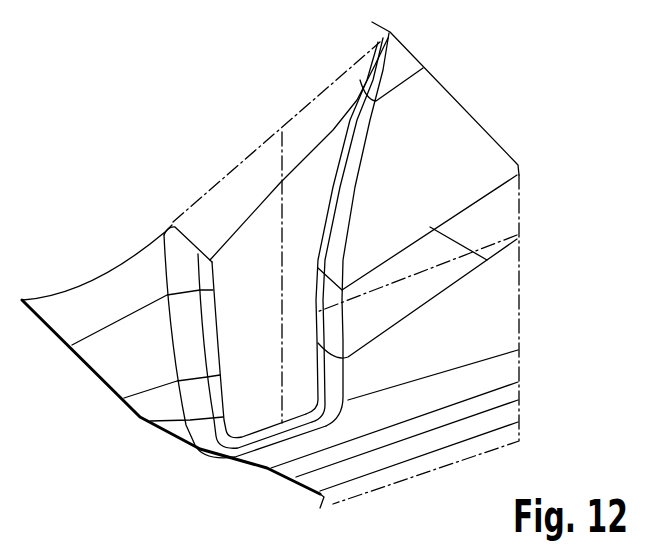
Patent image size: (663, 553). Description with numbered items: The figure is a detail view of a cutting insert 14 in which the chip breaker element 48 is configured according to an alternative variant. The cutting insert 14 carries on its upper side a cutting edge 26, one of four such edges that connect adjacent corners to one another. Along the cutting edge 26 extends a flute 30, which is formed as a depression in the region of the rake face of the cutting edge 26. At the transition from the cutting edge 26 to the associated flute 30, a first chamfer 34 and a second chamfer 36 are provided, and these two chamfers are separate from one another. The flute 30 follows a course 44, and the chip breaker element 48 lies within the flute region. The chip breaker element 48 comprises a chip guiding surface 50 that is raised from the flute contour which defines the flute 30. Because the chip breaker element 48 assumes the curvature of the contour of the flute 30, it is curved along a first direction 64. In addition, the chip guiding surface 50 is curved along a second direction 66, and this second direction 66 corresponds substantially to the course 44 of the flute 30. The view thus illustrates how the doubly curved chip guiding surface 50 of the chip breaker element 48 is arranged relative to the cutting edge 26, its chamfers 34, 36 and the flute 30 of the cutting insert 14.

The cutting insert 14 is at (507, 108).
The cutting edge 26 is at (503, 427).
The flute 30 is at (524, 262).
The first chamfer 34 is at (503, 392).
The second chamfer 36 is at (503, 357).
The course of the flute 44 is at (418, 272).
The chip breaker element 48 is at (137, 417).
The chip guiding surface 50 is at (240, 375).
The first direction 64 is at (283, 134).
The second direction 66 is at (330, 83).